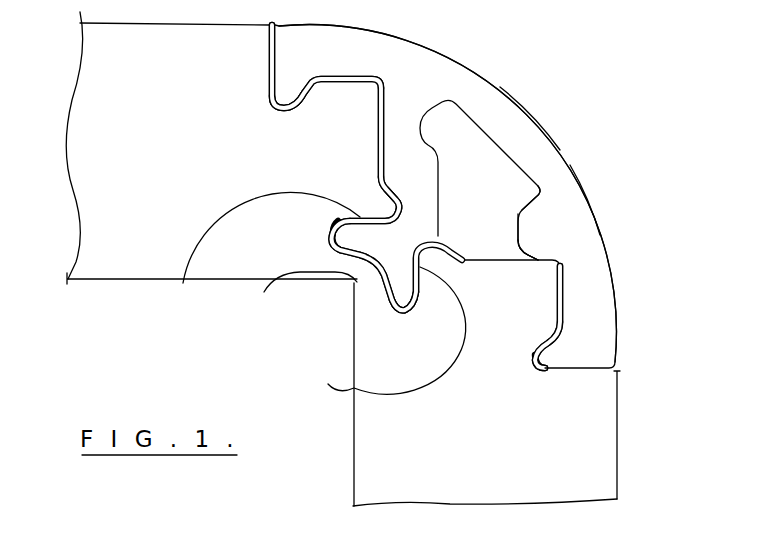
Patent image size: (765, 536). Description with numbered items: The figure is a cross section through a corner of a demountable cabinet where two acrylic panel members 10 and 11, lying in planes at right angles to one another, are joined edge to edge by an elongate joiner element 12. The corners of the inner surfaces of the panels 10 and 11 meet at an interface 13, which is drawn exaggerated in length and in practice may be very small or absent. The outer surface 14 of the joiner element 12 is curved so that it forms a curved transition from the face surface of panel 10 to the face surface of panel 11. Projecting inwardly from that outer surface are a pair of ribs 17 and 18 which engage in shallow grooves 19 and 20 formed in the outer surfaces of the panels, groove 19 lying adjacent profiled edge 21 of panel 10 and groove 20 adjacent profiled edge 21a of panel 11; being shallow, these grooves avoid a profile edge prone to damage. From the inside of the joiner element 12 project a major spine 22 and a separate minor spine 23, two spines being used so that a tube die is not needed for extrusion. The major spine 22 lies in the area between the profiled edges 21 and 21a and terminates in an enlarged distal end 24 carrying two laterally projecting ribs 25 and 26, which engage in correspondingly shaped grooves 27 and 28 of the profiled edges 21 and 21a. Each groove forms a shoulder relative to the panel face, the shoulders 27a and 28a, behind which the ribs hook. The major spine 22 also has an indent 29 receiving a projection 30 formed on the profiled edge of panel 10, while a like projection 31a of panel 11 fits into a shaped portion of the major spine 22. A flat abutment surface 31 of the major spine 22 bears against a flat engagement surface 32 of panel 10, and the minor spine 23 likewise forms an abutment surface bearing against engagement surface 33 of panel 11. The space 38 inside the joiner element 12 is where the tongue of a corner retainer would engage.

The panel member 10 is at (211, 148).
The panel member 11 is at (486, 383).
The elongate joiner element 12 is at (558, 145).
The interface 13 is at (299, 294).
The outer surface 14 is at (588, 201).
The rib 17 is at (288, 99).
The rib 18 is at (543, 360).
The groove 19 is at (287, 112).
The groove 20 is at (532, 362).
The profiled edge 21 is at (366, 96).
The profiled edge 21a is at (544, 283).
The major spine 22 is at (412, 162).
The minor spine 23 is at (520, 240).
The enlarged distal end 24 is at (393, 284).
The rib 25 is at (341, 240).
The rib 26 is at (395, 313).
The groove 27 is at (333, 229).
The shoulder 27a is at (260, 254).
The groove 28 is at (408, 313).
The shoulder 28a is at (373, 330).
The indent 29 is at (404, 200).
The projection 30 is at (392, 199).
The abutment surface 31 is at (387, 100).
The projection 31a is at (550, 251).
The engagement surface 32 is at (378, 134).
The engagement surface 33 is at (538, 123).
The space 38 is at (542, 186).